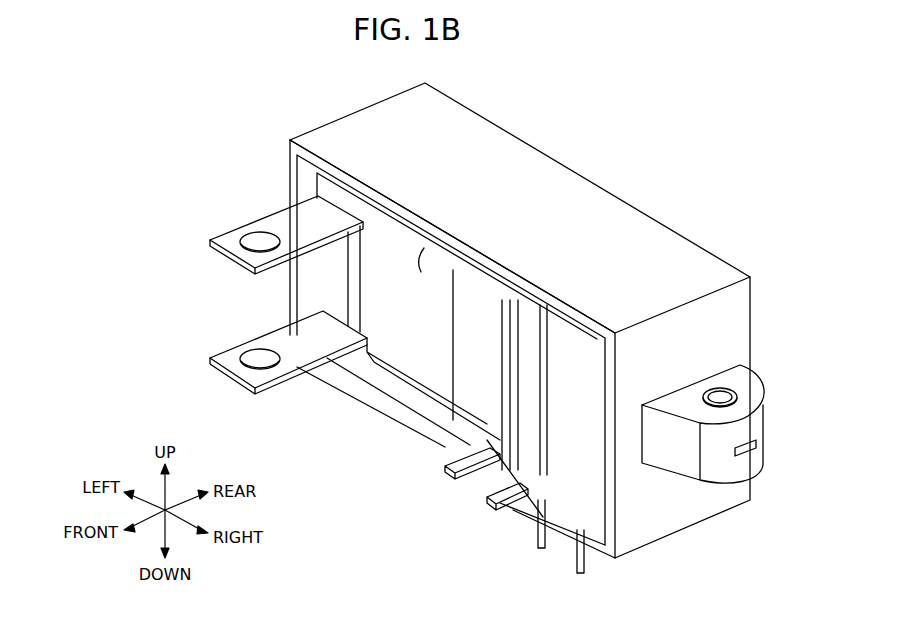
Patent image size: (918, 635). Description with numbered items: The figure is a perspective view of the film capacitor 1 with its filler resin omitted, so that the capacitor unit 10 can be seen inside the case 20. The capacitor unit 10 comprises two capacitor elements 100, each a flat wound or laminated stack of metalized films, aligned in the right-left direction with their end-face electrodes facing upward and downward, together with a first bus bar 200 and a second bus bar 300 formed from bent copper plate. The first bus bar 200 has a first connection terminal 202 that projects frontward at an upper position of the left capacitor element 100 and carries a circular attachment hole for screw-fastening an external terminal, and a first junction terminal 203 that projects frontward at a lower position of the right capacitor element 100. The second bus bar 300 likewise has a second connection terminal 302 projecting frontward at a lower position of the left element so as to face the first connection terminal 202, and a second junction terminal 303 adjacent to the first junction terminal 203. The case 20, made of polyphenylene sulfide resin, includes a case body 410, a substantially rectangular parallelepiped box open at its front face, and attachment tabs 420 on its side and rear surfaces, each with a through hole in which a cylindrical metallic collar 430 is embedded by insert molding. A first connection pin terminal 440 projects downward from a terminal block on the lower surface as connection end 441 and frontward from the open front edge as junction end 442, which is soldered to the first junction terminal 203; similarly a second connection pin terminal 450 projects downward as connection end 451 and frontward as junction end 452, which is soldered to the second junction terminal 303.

The film capacitor 1 is at (276, 137).
The capacitor unit 10 is at (387, 388).
The case 20 is at (659, 207).
The capacitor element 100 is at (424, 248).
The first bus bar 200 is at (230, 223).
The first connection terminal 202 is at (277, 212).
The first junction terminal 203 is at (548, 476).
The second bus bar 300 is at (292, 382).
The second connection terminal 302 is at (286, 338).
The second junction terminal 303 is at (463, 460).
The case body 410 is at (565, 163).
The attachment tab 420 is at (761, 398).
The collar 430 is at (723, 389).
The first connection pin terminal 440 is at (594, 557).
The connection end 441 is at (587, 557).
The junction end 442 is at (497, 511).
The second connection pin terminal 450 is at (528, 527).
The connection end 451 is at (540, 548).
The junction end 452 is at (452, 487).